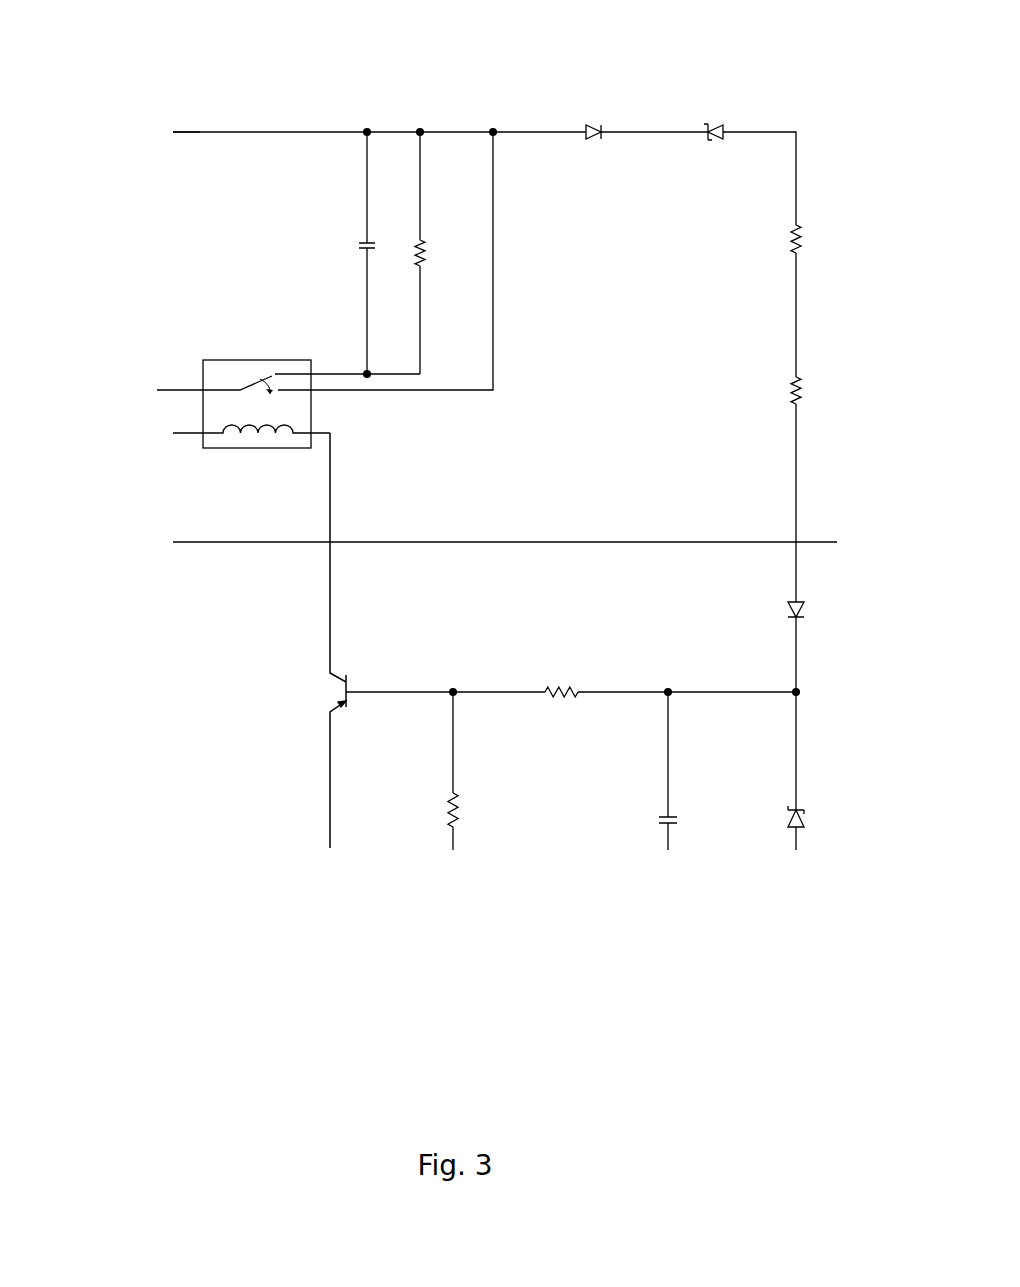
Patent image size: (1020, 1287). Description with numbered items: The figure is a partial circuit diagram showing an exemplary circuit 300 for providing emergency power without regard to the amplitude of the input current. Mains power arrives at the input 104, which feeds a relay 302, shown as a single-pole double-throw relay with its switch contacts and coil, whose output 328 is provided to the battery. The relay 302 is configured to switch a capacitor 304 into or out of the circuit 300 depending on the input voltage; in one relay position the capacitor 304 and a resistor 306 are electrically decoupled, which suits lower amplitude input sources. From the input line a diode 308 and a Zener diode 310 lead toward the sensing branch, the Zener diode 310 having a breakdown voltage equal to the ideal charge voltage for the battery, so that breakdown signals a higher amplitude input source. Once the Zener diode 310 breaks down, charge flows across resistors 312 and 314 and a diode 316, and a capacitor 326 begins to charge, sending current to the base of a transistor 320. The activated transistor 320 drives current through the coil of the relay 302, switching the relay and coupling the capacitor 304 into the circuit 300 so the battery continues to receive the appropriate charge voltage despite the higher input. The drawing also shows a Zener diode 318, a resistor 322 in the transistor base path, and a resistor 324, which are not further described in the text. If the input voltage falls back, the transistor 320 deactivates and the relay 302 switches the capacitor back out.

The input 104 is at (165, 126).
The circuit 300 is at (377, 849).
The relay 302 is at (203, 378).
The capacitor 304 is at (342, 246).
The resistor 306 is at (438, 240).
The diode 308 is at (613, 120).
The Zener diode 310 is at (722, 122).
The resistor 312 is at (807, 241).
The resistor 314 is at (815, 395).
The diode 316 is at (812, 612).
The zener diode 318 is at (812, 818).
The transistor 320 is at (318, 693).
The resistor 322 is at (550, 678).
The resistor 324 is at (470, 812).
The capacitor 326 is at (690, 818).
The output 328 is at (180, 390).